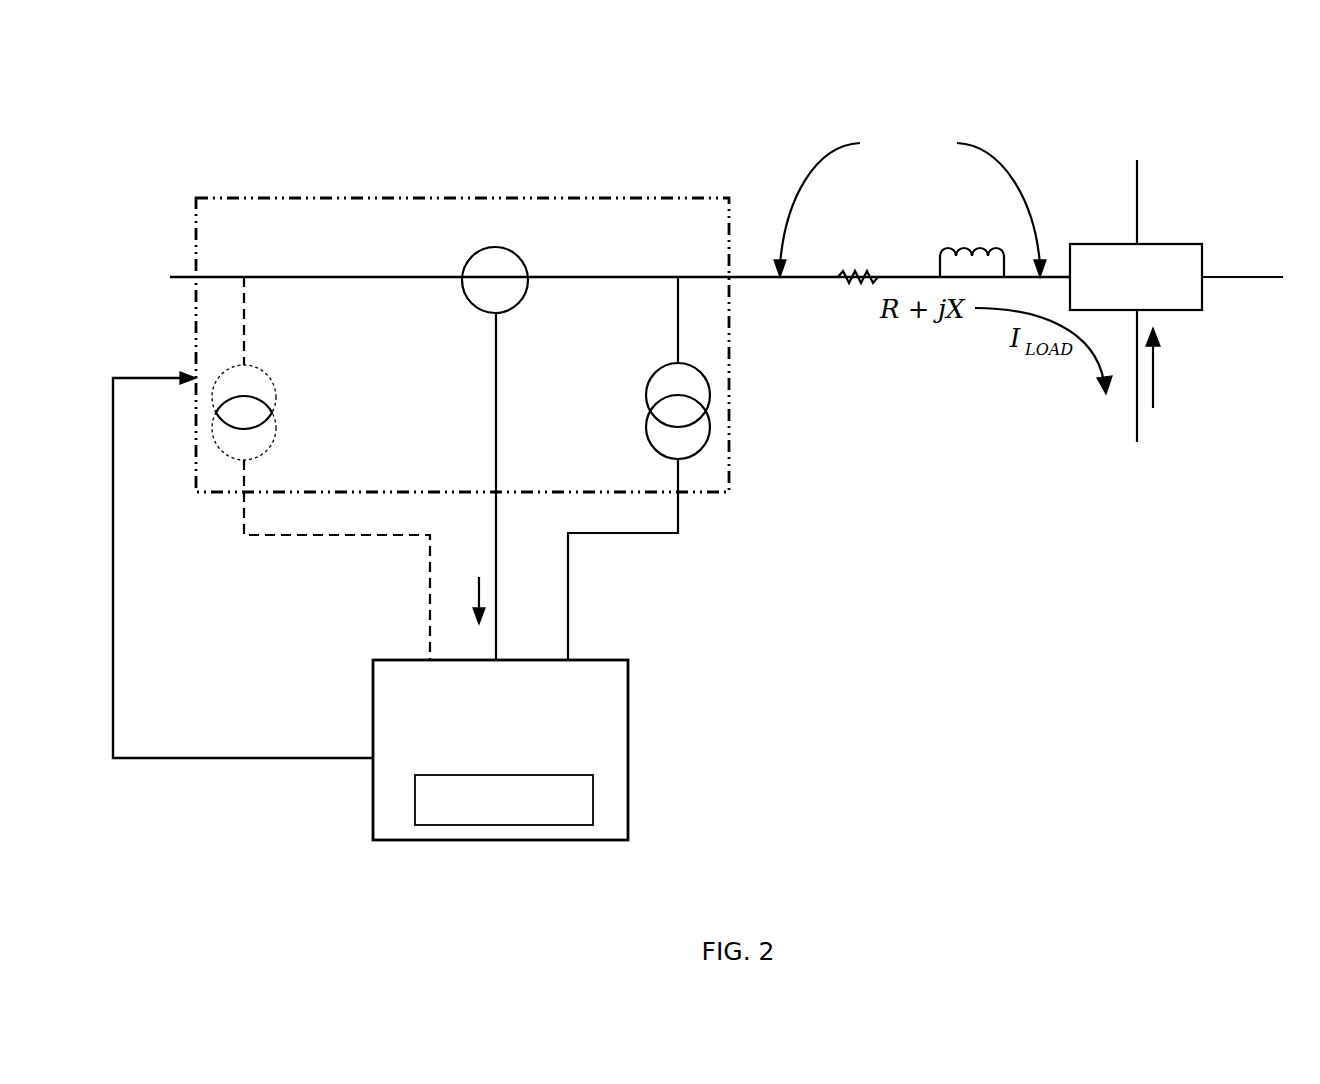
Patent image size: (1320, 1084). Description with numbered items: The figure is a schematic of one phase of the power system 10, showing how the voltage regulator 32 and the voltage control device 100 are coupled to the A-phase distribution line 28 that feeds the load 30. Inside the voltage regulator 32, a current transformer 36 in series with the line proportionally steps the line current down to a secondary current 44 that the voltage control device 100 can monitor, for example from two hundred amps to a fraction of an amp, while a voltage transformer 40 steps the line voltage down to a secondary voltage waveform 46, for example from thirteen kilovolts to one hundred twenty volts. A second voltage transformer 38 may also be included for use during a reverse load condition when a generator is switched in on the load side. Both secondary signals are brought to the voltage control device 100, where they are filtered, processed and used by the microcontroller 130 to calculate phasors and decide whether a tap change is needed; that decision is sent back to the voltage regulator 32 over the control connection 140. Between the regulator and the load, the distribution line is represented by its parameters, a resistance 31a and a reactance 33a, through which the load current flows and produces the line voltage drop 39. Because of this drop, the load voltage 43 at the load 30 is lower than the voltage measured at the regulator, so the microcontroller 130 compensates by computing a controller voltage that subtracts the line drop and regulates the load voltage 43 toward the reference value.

The power distribution system 10 is at (1145, 66).
The A-phase distribution line 28 is at (620, 301).
The load 30 is at (1177, 301).
The line resistance 31a is at (859, 257).
The voltage regulator 32 is at (475, 328).
The line reactance 33a is at (972, 244).
The current transformer 36 is at (512, 288).
The second voltage transformer 38 is at (321, 468).
The line voltage drop 39 is at (910, 203).
The voltage transformer 40 is at (658, 368).
The load voltage 43 is at (1199, 379).
The secondary current 44 is at (449, 486).
The secondary voltage waveform 46 is at (598, 559).
The voltage control device 100 is at (557, 750).
The microcontroller 130 is at (532, 811).
The control output line 140 is at (243, 590).